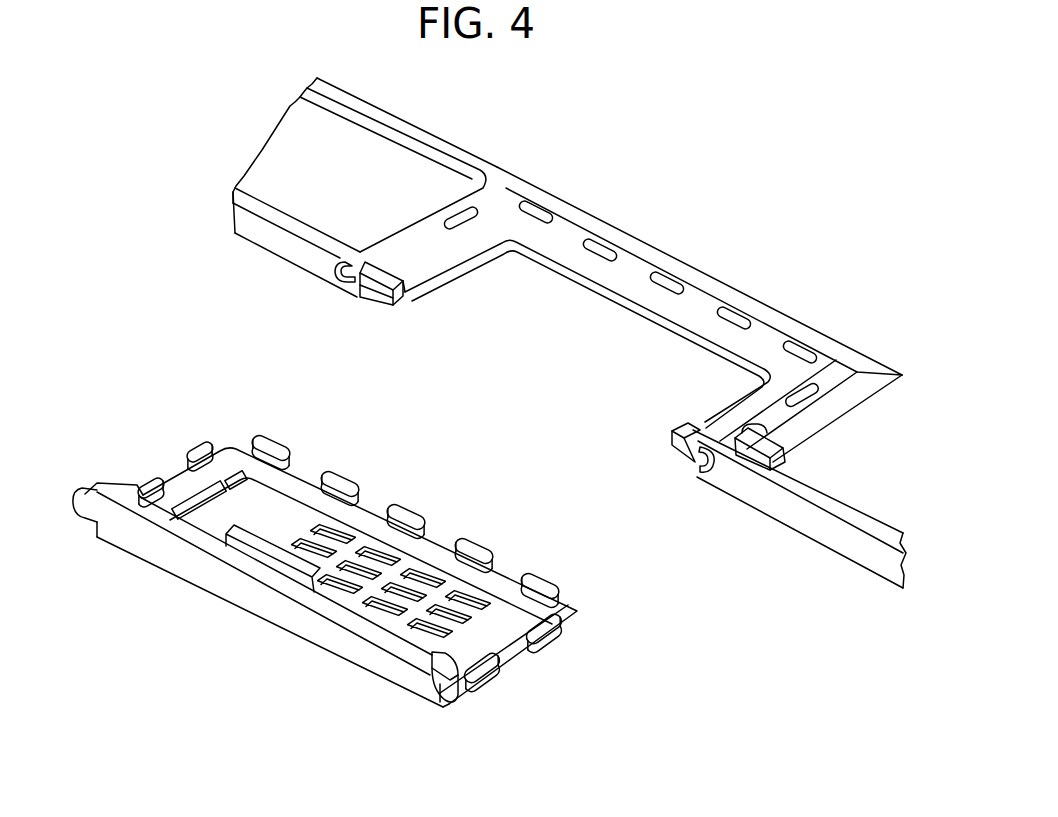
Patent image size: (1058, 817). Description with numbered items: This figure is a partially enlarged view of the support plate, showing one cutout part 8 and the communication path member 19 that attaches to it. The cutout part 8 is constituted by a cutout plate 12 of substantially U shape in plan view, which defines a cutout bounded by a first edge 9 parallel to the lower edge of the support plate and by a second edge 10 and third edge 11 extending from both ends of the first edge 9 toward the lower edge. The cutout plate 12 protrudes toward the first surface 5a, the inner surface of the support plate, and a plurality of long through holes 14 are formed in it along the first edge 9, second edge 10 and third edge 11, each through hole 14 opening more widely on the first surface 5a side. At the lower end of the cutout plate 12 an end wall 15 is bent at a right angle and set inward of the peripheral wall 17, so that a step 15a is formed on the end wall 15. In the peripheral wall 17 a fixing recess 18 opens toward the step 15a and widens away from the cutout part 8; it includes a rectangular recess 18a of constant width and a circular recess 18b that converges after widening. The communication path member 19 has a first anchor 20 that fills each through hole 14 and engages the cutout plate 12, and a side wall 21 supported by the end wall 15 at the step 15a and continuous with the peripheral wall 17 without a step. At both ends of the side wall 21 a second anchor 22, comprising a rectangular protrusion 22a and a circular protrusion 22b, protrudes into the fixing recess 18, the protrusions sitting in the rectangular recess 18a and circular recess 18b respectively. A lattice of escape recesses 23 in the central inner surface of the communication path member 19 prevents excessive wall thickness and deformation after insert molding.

The first surface 5a is at (288, 130).
The cutout part 8 is at (508, 238).
The first edge 9 is at (650, 315).
The second edge 10 is at (450, 270).
The third edge 11 is at (727, 408).
The cutout plate 12 is at (565, 232).
The through hole 14 is at (743, 313).
The end wall 15 is at (400, 290).
The step 15a is at (377, 288).
The peripheral wall 17 is at (265, 233).
The fixing recess 18 is at (340, 262).
The rectangular recess 18a is at (693, 462).
The circular recess 18b is at (695, 470).
The communication path member 19 is at (402, 697).
The first anchor 20 is at (473, 550).
The side wall 21 is at (203, 573).
The second anchor 22 is at (82, 517).
The rectangular protrusion 22a is at (430, 697).
The circular protrusion 22b is at (450, 700).
The escape recess 23 is at (370, 555).